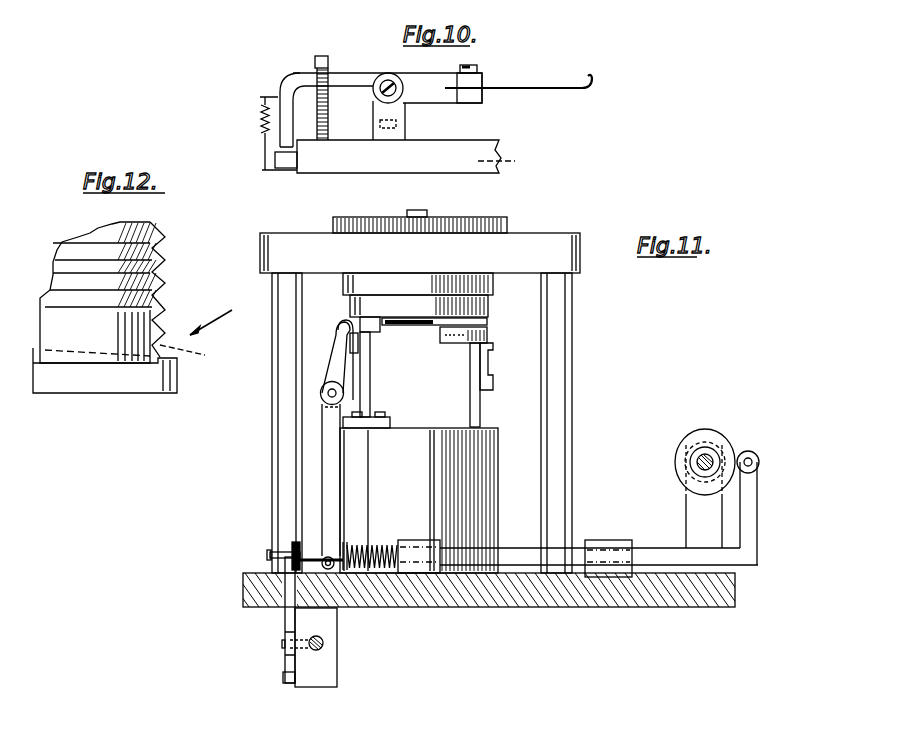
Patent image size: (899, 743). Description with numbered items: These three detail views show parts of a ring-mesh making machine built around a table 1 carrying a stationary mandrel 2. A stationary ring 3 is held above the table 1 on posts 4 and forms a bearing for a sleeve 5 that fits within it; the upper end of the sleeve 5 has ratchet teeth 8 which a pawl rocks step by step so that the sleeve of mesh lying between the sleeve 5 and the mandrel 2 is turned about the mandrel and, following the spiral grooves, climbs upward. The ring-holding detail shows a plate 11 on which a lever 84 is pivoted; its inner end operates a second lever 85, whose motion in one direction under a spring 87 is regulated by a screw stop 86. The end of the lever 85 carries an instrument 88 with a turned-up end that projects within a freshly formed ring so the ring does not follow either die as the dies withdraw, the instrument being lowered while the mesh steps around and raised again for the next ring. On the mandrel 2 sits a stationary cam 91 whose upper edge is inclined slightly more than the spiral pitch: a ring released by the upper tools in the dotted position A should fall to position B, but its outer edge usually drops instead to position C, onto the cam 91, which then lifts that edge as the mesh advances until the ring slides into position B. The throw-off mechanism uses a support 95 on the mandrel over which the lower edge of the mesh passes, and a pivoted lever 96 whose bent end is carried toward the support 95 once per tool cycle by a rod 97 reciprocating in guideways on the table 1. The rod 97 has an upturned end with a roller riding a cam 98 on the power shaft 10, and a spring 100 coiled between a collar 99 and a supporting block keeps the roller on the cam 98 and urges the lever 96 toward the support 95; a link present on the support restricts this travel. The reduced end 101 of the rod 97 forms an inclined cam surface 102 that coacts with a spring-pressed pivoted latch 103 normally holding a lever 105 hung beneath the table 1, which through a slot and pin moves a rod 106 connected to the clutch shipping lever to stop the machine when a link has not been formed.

In FIG. 11, the table 1 is at (512, 607).
In FIG. 12, the stationary mandrel 2 is at (73, 262).
In FIG. 11, the stationary mandrel 2 is at (488, 323).
In FIG. 11, the stationary ring 3 is at (537, 246).
In FIG. 11, the posts 4 is at (567, 333).
In FIG. 11, the sleeve 5 is at (493, 286).
In FIG. 11, the ratchet teeth 8 is at (508, 227).
In FIG. 11, the power shaft 10 is at (694, 460).
In FIG. 10, the plate 11 is at (423, 156).
In FIG. 10, the lever 84 is at (275, 160).
In FIG. 10, the lever 85 is at (291, 82).
In FIG. 10, the screw stop 86 is at (314, 67).
In FIG. 10, the spring 87 is at (262, 115).
In FIG. 10, the instrument 88 is at (541, 87).
In FIG. 12, the cam 91 is at (40, 325).
In FIG. 11, the cam 91 is at (454, 343).
In FIG. 11, the support 95 is at (348, 342).
In FIG. 11, the pivoted lever 96 is at (338, 353).
In FIG. 11, the rod 97 is at (519, 550).
In FIG. 11, the cam 98 is at (713, 433).
In FIG. 11, the collar 99 is at (348, 548).
In FIG. 11, the spring 100 is at (378, 546).
In FIG. 11, the reduced end of rod 101 is at (270, 553).
In FIG. 11, the inclined cam surface 102 is at (297, 553).
In FIG. 11, the pivoted latch 103 is at (291, 547).
In FIG. 11, the lever 105 is at (290, 619).
In FIG. 11, the rod 106 is at (324, 643).
In FIG. 12, the ring position A is at (196, 338).
In FIG. 12, the ring position B is at (157, 365).
In FIG. 12, the ring position C is at (165, 357).